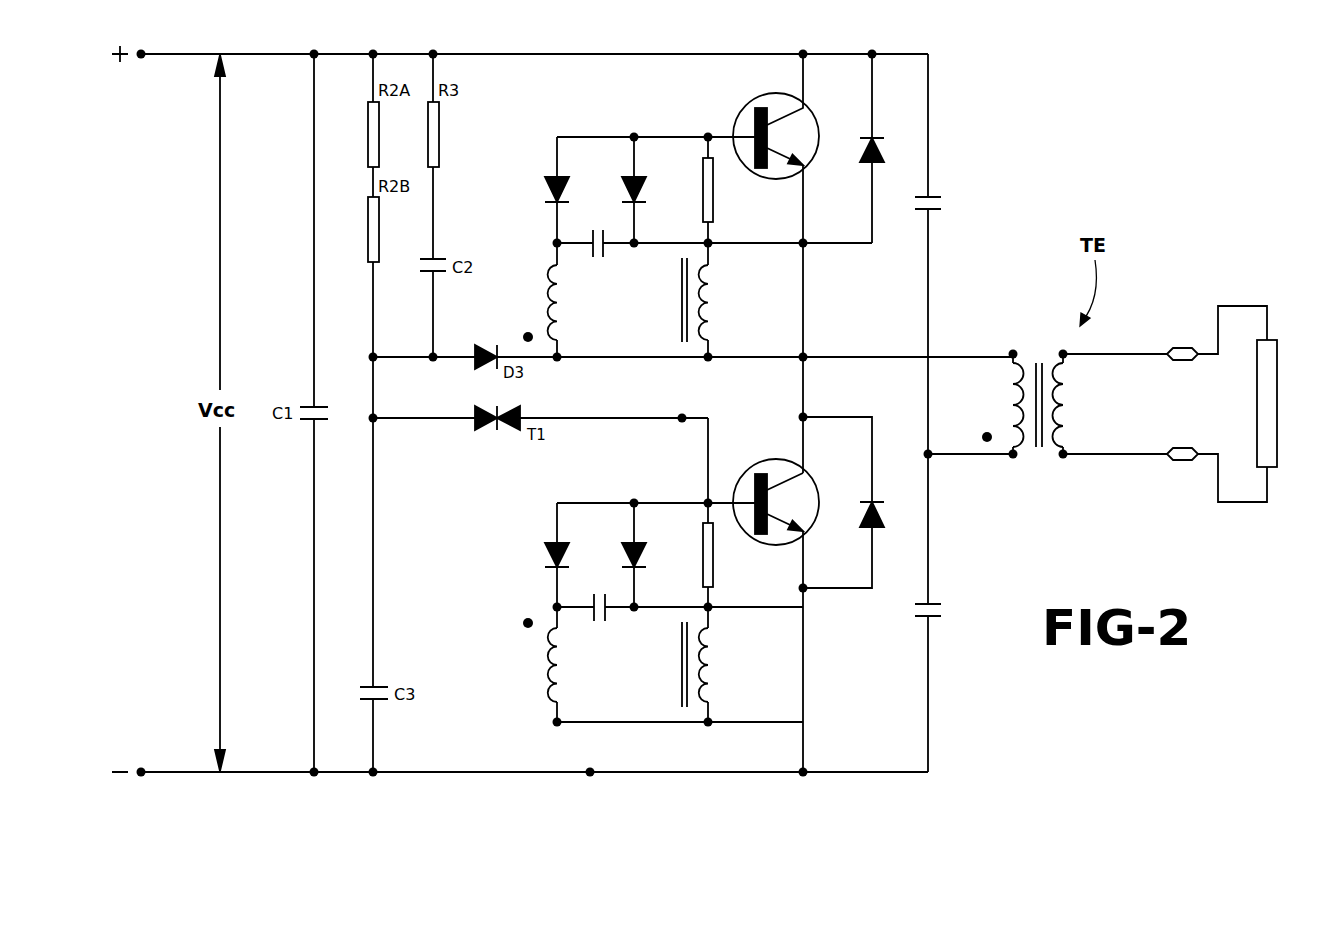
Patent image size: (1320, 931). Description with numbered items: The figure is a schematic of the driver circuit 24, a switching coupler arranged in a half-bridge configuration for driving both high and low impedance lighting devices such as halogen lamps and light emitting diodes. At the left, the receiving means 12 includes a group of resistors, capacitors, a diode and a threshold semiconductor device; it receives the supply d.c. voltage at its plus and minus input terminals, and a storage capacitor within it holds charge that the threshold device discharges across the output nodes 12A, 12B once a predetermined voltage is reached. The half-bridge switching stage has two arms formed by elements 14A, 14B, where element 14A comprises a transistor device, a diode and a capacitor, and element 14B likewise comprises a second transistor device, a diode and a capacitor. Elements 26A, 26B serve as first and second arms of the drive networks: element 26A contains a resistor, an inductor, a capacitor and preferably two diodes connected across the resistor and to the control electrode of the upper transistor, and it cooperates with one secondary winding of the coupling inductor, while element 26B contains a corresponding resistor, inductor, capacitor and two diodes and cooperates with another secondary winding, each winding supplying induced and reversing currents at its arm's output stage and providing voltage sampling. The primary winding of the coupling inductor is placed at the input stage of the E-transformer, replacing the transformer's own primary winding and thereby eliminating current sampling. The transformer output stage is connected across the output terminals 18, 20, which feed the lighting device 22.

The receiving means 12 is at (488, 133).
The output node 12A is at (682, 417).
The output node 12B is at (590, 772).
The first arm element of the half-bridge switching coupler 14A is at (896, 117).
The second arm element of the half-bridge switching coupler 14B is at (890, 464).
The output terminal 18 is at (1185, 351).
The output terminal 20 is at (1178, 462).
The lighting device 22 is at (1280, 361).
The driver circuit 24 is at (1055, 172).
The first arm element 26A is at (704, 118).
The second arm element 26B is at (672, 483).